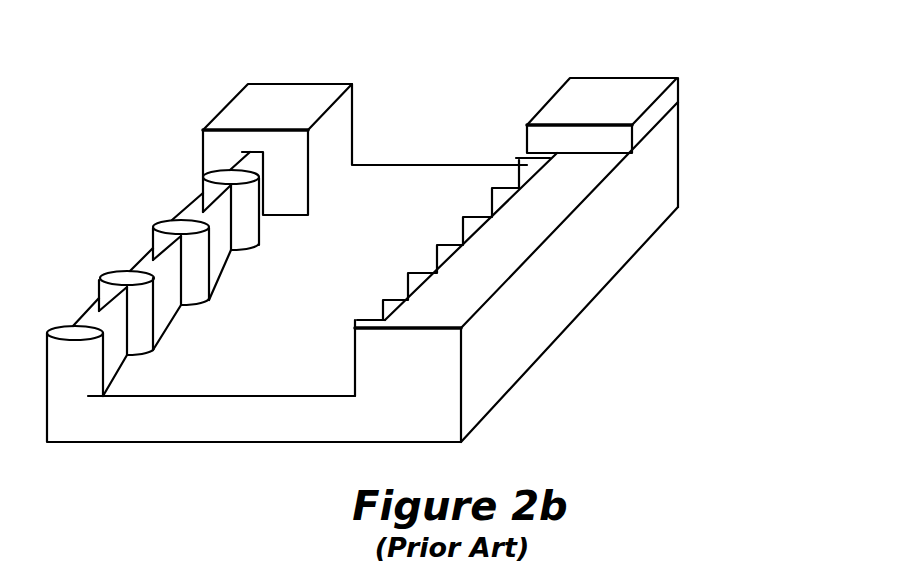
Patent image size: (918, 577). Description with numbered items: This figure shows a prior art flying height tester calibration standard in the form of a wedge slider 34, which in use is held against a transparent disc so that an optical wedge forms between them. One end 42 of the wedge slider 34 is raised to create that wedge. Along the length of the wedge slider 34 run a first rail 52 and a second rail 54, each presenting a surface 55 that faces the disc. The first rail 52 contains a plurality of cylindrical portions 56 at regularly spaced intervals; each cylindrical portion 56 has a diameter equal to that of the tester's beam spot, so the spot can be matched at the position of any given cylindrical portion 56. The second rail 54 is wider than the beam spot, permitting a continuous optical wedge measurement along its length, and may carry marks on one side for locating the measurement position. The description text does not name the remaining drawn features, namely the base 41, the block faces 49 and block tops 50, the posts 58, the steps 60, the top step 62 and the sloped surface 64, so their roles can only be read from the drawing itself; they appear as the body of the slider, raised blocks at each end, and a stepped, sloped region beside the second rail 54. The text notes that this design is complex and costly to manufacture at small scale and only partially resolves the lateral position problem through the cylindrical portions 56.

The wedge slider 34 is at (742, 218).
The base 41 is at (437, 410).
The end of the wedge slider 42 is at (667, 190).
The block side surface 49 is at (213, 143).
The block top surface 50 is at (290, 91).
The first rail 52 is at (190, 191).
The second rail 54 is at (606, 241).
The surface 55 is at (215, 374).
The cylindrical portions 56 is at (153, 340).
The cylindrical contacts 58 is at (113, 280).
The steps 60 is at (460, 216).
The top step 62 is at (517, 162).
The sloped surface 64 is at (485, 273).